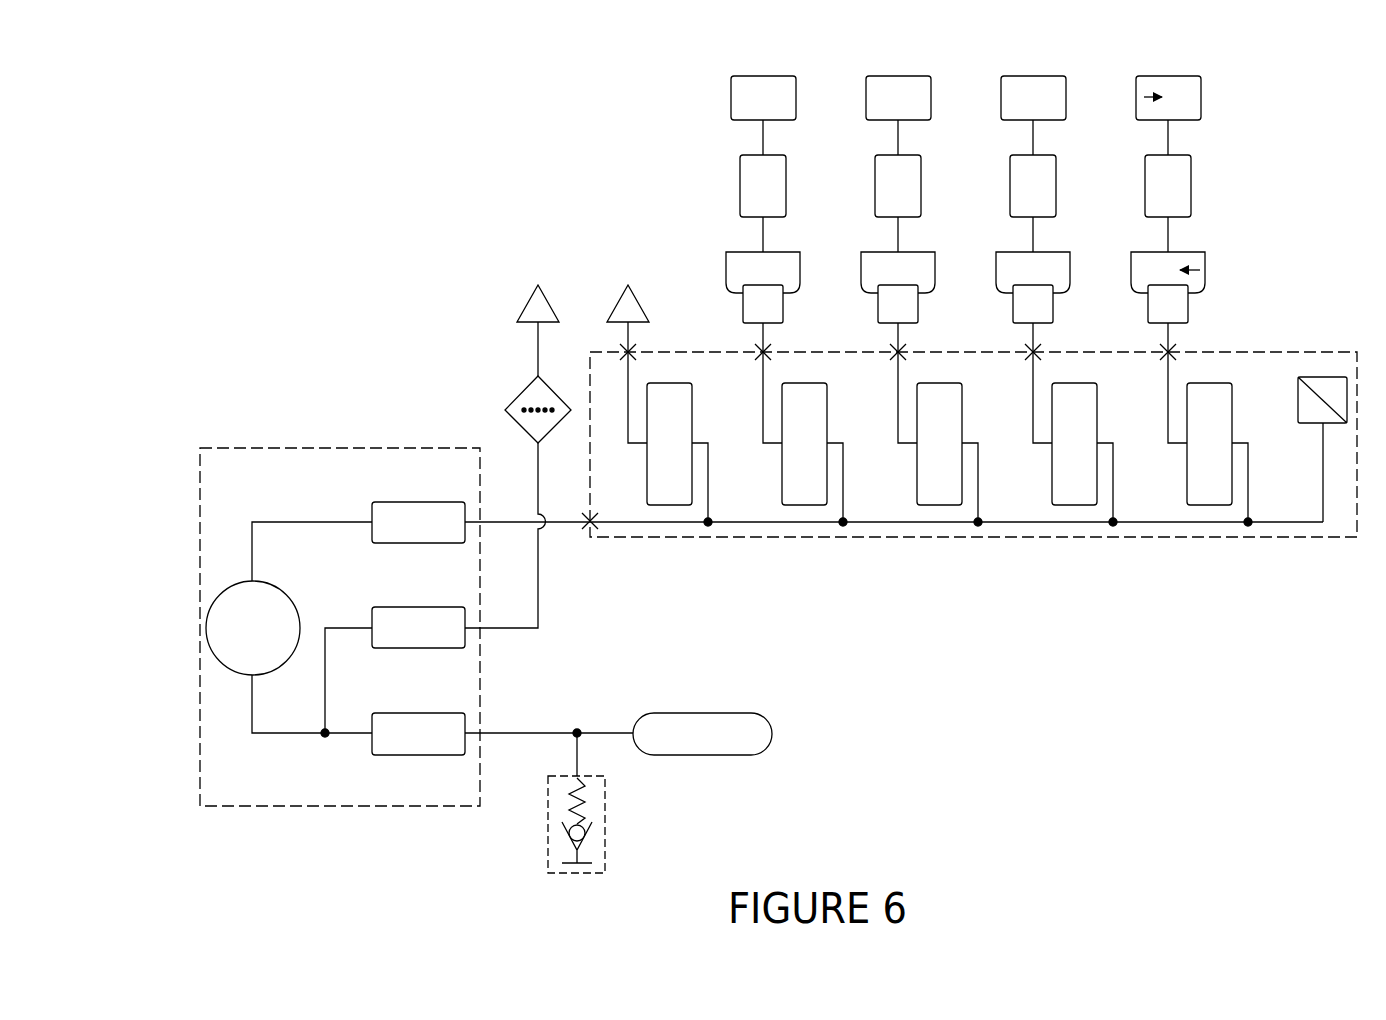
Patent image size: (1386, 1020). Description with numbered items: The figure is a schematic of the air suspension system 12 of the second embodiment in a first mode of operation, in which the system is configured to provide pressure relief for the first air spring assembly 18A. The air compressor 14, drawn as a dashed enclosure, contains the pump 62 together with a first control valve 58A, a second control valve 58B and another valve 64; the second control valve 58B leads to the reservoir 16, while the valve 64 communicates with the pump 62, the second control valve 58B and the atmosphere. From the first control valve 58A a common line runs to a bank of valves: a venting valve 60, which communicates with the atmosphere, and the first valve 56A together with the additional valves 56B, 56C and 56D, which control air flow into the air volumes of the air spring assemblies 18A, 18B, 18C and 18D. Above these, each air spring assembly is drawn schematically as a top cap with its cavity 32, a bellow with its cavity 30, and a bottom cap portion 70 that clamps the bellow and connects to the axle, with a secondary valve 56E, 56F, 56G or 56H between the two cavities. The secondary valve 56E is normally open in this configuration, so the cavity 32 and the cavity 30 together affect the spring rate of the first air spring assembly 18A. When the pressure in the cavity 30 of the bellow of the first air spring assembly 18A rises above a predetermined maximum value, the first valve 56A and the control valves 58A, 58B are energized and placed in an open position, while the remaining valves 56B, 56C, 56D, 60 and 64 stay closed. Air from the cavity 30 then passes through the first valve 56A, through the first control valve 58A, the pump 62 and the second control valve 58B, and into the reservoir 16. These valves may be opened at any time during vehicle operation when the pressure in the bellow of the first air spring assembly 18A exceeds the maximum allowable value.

The air suspension system 12 is at (212, 399).
The air compressor 14 is at (262, 828).
The reservoir 16 is at (772, 735).
The first air spring assembly 18A is at (1167, 66).
The second air spring assembly 18B is at (1032, 66).
The third air spring assembly 18C is at (897, 66).
The fourth air spring assembly 18D is at (762, 66).
The cavity of the bellow 30 is at (1200, 270).
The cavity of the top cap 32 is at (1144, 97).
The first valve 56A is at (1208, 493).
The second valve 56B is at (1073, 493).
The third valve 56C is at (938, 493).
The fourth valve 56D is at (803, 493).
The secondary valve 56E is at (1191, 187).
The secondary valve 56F is at (1010, 187).
The secondary valve 56G is at (875, 187).
The secondary valve 56H is at (740, 187).
The first control valve 58A is at (415, 543).
The second control valve 58B is at (415, 755).
The venting valve 60 is at (668, 493).
The pump 62 is at (207, 626).
The valve 64 is at (415, 648).
The bottom cap portion 70 is at (1188, 308).